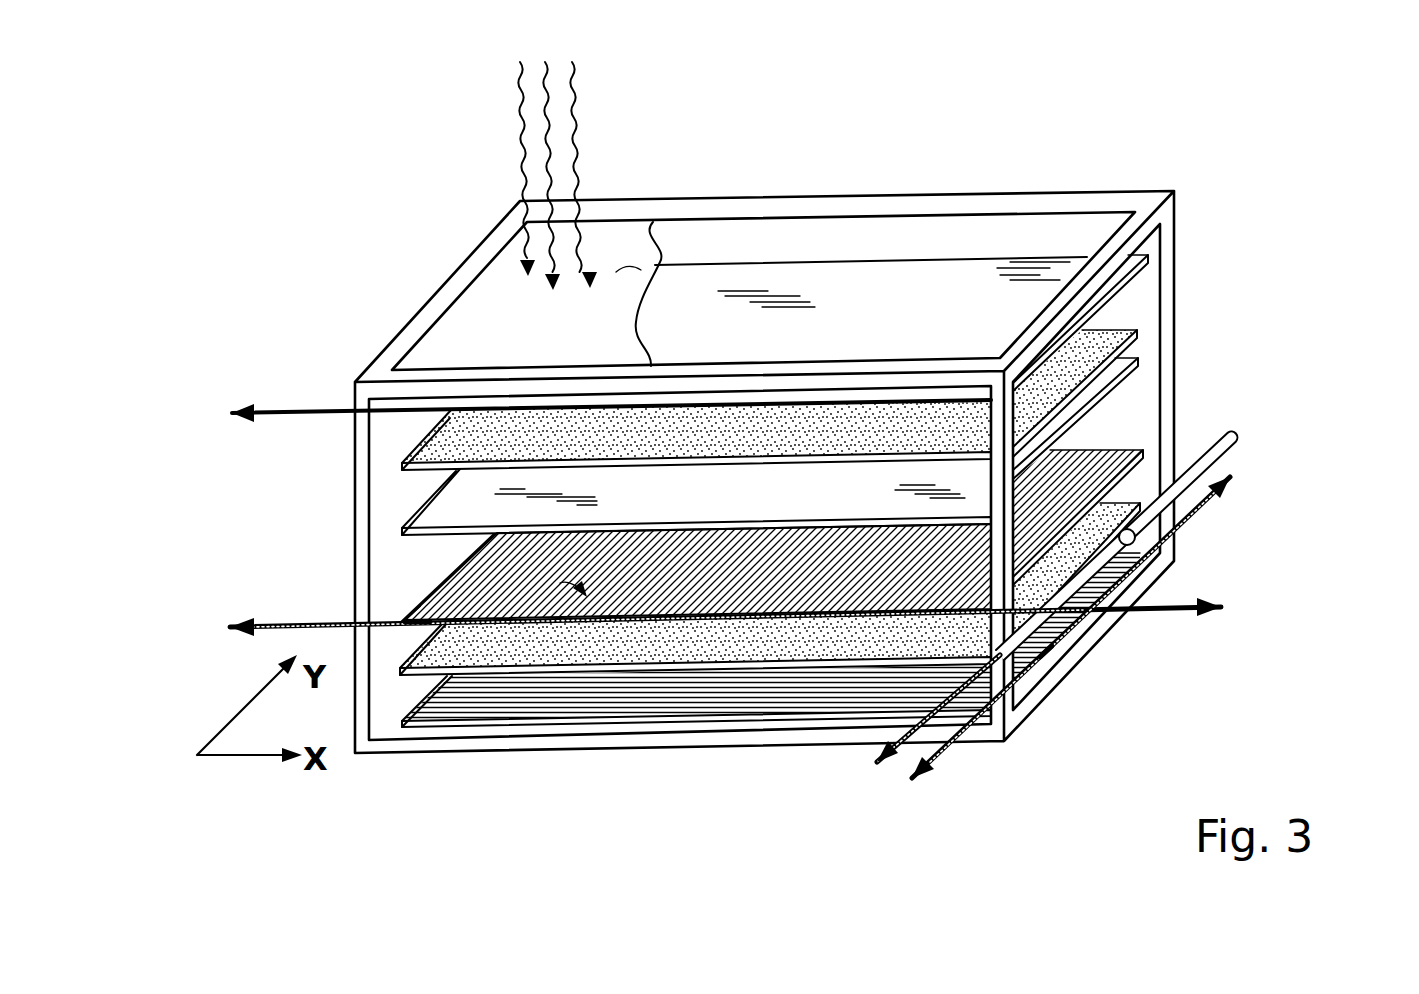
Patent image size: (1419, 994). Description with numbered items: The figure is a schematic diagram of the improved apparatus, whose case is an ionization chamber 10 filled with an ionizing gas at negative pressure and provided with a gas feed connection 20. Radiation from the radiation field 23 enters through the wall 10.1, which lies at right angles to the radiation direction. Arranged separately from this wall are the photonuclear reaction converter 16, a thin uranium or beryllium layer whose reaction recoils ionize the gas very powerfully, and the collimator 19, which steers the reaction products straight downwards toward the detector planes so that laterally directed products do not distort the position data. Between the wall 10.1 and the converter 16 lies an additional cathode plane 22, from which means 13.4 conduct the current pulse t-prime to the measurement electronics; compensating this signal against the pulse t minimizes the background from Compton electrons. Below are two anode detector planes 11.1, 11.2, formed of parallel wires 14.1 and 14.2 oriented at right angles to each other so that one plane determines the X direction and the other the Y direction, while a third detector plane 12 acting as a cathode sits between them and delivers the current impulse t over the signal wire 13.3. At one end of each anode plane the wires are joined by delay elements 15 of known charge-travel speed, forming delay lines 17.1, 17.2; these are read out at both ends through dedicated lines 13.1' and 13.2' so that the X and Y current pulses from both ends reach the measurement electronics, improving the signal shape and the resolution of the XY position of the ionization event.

The ionization chamber 10 is at (1160, 220).
The wall 10.1 is at (629, 268).
The detector plane 11.1 is at (1092, 456).
The detector plane 11.2 is at (628, 700).
The detector plane 12 is at (752, 640).
The line 13.1' is at (1284, 633).
The line 13.2' is at (999, 795).
The signal wire 13.3 is at (870, 737).
The means for conducting current pulse 13.4 is at (317, 410).
The wires 14.1 is at (514, 626).
The wires 14.2 is at (826, 692).
The delay elements 15 is at (407, 623).
The photonuclear reaction converter 16 is at (816, 443).
The delay line 17.1 is at (737, 600).
The delay line 17.2 is at (1097, 641).
The collimator 19 is at (761, 508).
The gas feed connection 20 is at (1240, 437).
The additional cathode plane 22 is at (891, 323).
The radiation field 23 is at (492, 140).